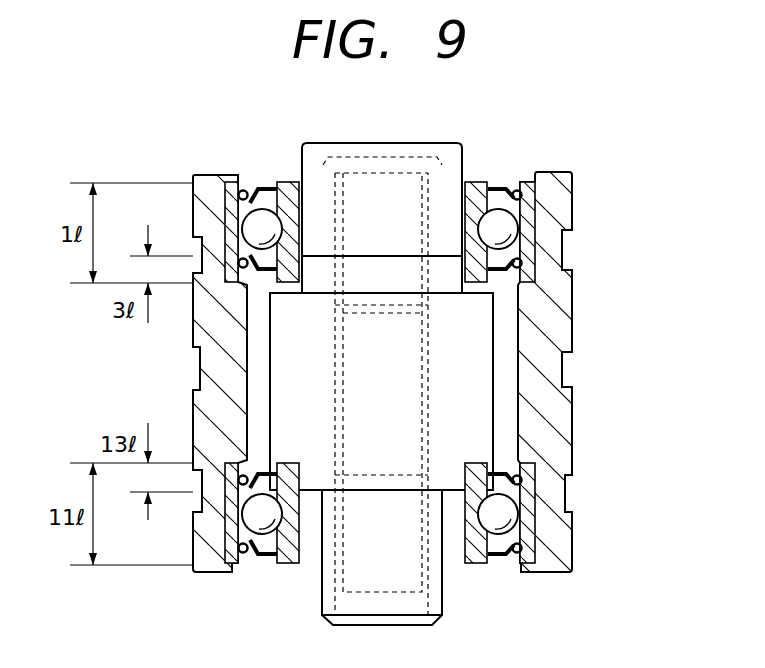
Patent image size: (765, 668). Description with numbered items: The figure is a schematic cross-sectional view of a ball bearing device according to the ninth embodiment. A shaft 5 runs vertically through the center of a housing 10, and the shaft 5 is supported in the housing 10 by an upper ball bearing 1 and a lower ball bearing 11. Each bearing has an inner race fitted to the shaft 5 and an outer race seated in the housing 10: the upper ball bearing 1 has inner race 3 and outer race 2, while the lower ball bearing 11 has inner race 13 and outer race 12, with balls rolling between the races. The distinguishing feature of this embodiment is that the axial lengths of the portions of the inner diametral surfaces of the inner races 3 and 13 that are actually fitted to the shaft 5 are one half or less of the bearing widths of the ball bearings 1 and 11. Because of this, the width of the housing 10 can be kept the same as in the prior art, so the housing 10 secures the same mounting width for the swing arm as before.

The upper ball bearing 1 is at (529, 188).
The outer race 2 is at (530, 210).
The inner race 3 is at (475, 188).
The shaft 5 is at (313, 158).
The housing 10 is at (558, 277).
The lower ball bearing 11 is at (537, 555).
The outer race 12 is at (528, 520).
The inner race 13 is at (474, 556).